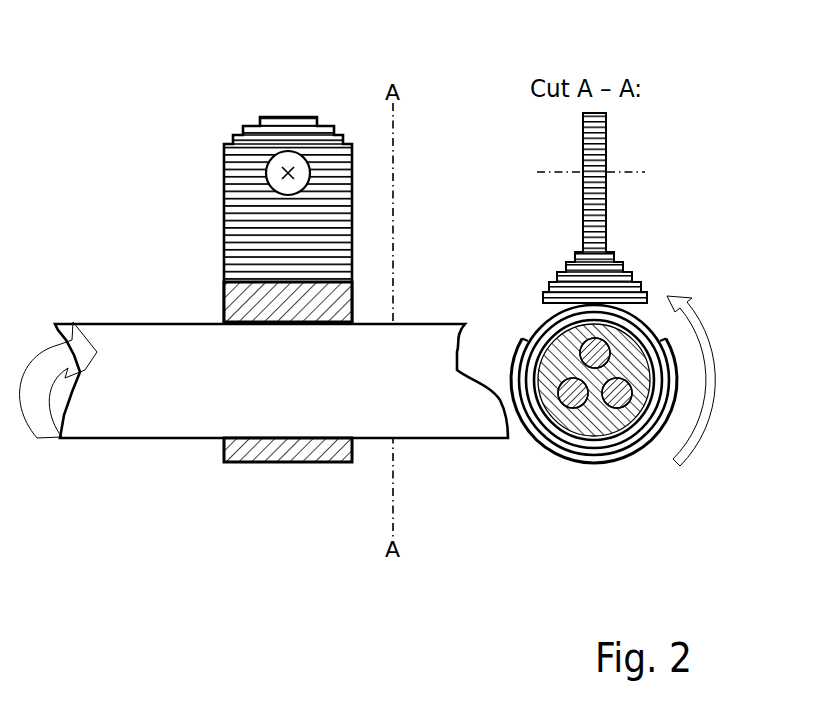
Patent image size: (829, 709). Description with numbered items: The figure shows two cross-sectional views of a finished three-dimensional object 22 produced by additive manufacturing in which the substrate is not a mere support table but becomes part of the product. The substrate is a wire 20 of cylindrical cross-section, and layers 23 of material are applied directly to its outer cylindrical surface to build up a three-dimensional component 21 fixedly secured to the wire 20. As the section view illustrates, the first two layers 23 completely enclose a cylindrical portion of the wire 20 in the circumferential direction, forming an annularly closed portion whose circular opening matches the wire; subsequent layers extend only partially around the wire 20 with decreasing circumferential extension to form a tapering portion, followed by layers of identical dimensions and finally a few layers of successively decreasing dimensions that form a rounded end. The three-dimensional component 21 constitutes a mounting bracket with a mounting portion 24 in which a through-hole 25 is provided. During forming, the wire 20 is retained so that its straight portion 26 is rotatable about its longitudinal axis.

The substrate 20 is at (97, 420).
The three-dimensional component 21 is at (407, 286).
The three-dimensional object 22 is at (416, 286).
The layers 23 is at (538, 312).
The mounting portion 24 is at (192, 197).
The through-hole 25 is at (288, 172).
The straight portion 26 is at (155, 458).